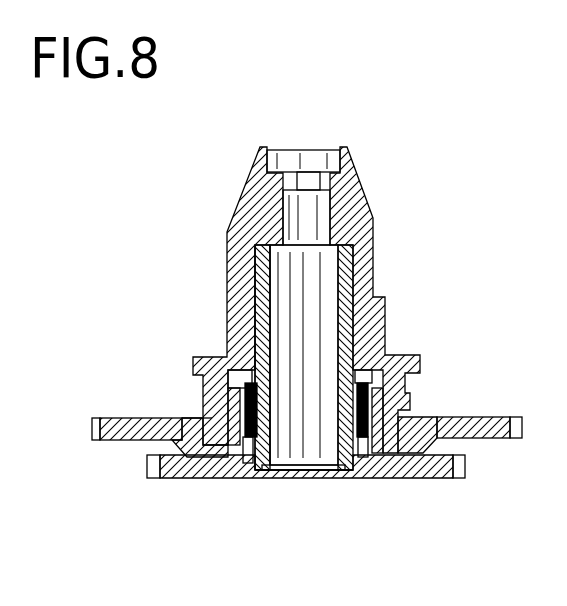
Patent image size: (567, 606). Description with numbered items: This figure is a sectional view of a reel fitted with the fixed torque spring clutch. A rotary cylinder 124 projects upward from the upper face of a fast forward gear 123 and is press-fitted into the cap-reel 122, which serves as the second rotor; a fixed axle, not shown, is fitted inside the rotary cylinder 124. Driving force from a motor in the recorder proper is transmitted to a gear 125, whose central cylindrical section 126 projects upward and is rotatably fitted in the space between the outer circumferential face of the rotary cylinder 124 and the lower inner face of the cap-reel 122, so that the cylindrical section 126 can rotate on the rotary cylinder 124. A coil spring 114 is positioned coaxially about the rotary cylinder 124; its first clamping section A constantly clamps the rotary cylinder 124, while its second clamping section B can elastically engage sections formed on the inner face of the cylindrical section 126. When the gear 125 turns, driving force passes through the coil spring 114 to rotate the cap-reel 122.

The cap-reel 122 is at (352, 166).
The rotary cylinder 124 is at (350, 272).
The cylindrical section 126 is at (211, 409).
The coil spring 114 is at (247, 385).
The gear 125 is at (120, 440).
The fast forward gear 123 is at (400, 467).
The first clamping section A is at (268, 378).
The second clamping section B is at (264, 374).